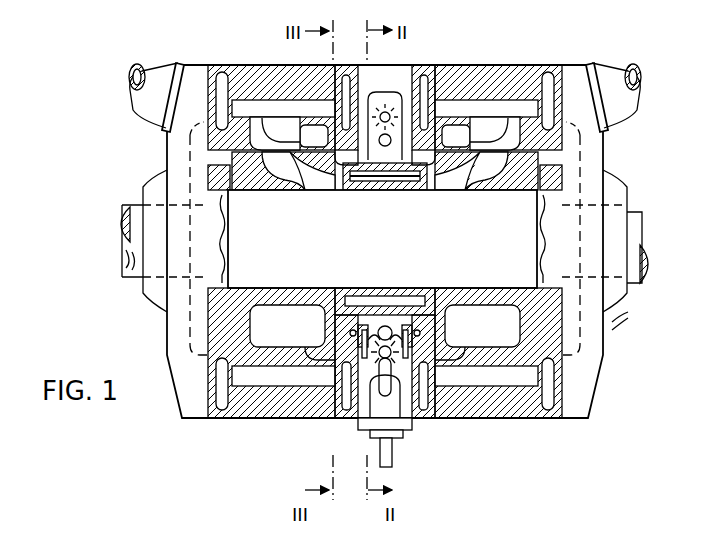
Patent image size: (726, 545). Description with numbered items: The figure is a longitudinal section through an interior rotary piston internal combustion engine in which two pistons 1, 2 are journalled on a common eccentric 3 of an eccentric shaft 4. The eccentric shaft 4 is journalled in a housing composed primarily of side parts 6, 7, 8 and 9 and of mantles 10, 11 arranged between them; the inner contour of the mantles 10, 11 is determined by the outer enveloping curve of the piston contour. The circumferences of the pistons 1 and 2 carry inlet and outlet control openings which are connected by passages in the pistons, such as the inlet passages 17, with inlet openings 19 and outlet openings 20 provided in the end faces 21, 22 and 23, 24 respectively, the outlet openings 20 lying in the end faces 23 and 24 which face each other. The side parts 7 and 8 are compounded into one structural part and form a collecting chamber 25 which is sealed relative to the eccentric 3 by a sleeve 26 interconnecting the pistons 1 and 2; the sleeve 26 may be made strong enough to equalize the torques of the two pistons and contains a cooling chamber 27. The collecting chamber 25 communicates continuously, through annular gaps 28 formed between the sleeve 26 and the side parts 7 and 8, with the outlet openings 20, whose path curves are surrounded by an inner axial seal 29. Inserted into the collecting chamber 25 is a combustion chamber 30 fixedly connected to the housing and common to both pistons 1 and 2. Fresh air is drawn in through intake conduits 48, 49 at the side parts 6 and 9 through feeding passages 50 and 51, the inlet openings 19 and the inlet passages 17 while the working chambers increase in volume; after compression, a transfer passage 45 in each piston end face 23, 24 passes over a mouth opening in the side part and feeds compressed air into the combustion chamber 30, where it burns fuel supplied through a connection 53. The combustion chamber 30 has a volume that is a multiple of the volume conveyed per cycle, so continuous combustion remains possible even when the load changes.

The piston 1 is at (293, 298).
The piston 2 is at (472, 298).
The eccentric 3 is at (396, 273).
The eccentric shaft 4 is at (636, 222).
The side part 6 is at (213, 418).
The side part 7 is at (355, 418).
The side part 8 is at (430, 420).
The side part 9 is at (553, 418).
The mantle 10 is at (248, 68).
The mantle 11 is at (492, 72).
The inlet passage 17 is at (270, 172).
The inlet opening 19 is at (232, 178).
The outlet opening 20 is at (316, 160).
The end face 21 is at (224, 134).
The end face 22 is at (535, 143).
The end face 23 is at (340, 166).
The end face 24 is at (432, 166).
The collecting chamber 25 is at (395, 72).
The sleeve 26 is at (372, 187).
The cooling chamber 27 is at (408, 187).
The annular gap 28 is at (385, 116).
The inner axial seal 29 is at (345, 300).
The combustion chamber 30 is at (392, 417).
The transfer passage 45 is at (440, 355).
The intake conduit 48 is at (150, 73).
The intake conduit 49 is at (608, 78).
The feeding passage 50 is at (215, 158).
The feeding passage 51 is at (548, 160).
The connection 53 is at (390, 458).